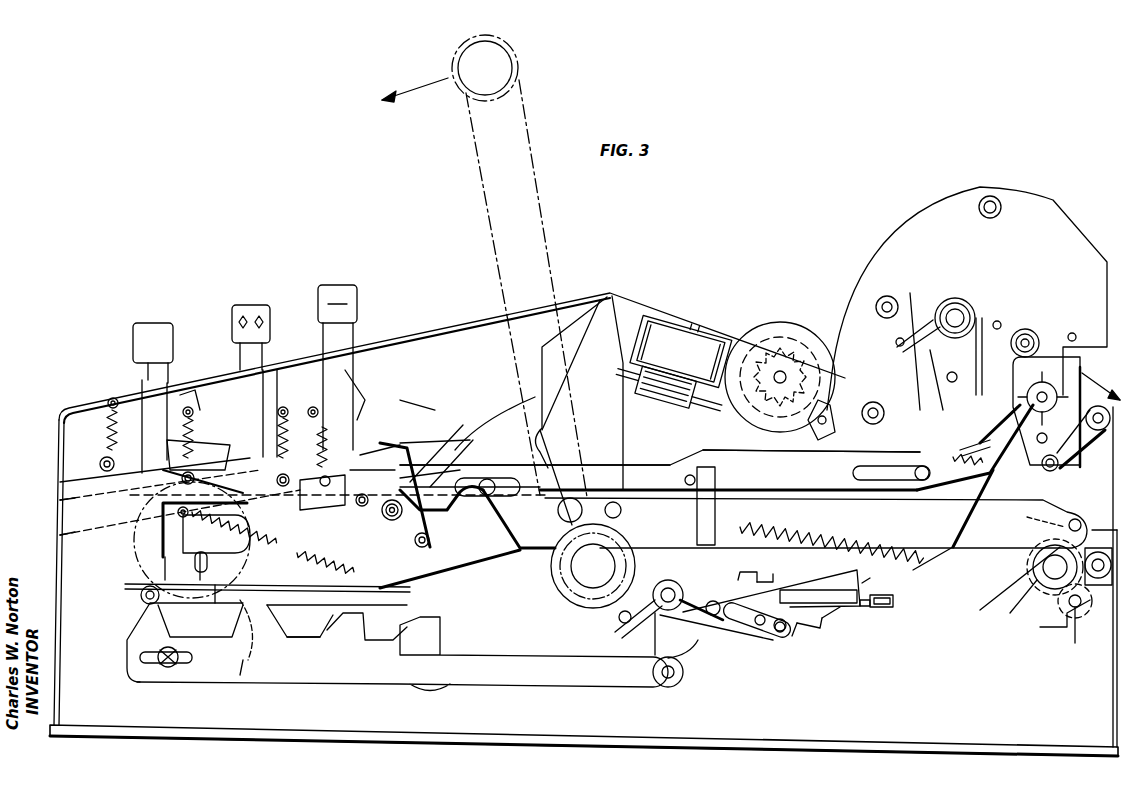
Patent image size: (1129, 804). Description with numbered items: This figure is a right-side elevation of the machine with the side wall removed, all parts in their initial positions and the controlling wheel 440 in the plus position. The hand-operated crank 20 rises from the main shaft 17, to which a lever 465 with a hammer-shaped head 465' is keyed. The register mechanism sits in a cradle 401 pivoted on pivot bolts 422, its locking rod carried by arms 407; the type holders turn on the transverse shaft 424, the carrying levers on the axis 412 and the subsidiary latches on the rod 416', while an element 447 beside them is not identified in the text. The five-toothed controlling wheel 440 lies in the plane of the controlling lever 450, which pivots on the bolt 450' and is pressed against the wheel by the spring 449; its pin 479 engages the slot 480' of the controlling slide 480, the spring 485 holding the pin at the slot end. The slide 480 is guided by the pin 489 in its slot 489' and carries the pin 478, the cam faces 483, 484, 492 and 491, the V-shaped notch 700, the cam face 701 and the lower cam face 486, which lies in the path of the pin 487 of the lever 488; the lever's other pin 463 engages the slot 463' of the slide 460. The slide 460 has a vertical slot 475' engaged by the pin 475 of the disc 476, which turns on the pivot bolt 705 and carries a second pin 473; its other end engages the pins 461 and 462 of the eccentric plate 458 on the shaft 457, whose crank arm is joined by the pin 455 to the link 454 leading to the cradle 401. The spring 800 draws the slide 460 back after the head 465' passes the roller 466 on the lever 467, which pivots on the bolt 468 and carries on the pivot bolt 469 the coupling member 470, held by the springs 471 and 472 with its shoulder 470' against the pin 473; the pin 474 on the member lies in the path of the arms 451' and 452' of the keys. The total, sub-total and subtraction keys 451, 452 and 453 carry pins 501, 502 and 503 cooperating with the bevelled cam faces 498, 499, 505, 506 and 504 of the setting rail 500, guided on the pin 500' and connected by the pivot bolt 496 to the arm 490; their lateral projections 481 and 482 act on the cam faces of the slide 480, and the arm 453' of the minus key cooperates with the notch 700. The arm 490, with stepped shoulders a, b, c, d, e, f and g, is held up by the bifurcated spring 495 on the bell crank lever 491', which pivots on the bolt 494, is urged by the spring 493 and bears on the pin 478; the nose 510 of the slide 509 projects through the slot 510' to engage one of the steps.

The hand-operated crank 20 is at (526, 132).
The main shaft 17 is at (576, 574).
The cradle 401 is at (1101, 381).
The arms 407 is at (987, 447).
The axis 412 is at (990, 196).
The rod 416' is at (1093, 323).
The pivot bolts 422 is at (1000, 445).
The shaft 424 is at (870, 402).
The controlling wheel 440 is at (1052, 366).
The hole 447 is at (997, 320).
The spring 449 is at (915, 330).
The controlling lever 450 is at (909, 345).
The bolt 450' is at (953, 305).
The total key 451 is at (141, 398).
The arm 451' is at (217, 513).
The sub-total key 452 is at (269, 381).
The arm 452' is at (198, 453).
The subtraction key 453 is at (355, 367).
The arm 453' is at (397, 409).
The link 454 is at (1090, 477).
The pin 455 is at (1078, 548).
The shaft 457 is at (1045, 568).
The eccentric plate 458 is at (1078, 608).
The slide 460 is at (975, 548).
The pin 461 is at (1075, 643).
The pin 462 is at (1068, 524).
The pin 463 is at (600, 381).
The slot 463' is at (612, 510).
The lever 465 is at (557, 393).
The head 465' is at (494, 423).
The roller 466 is at (440, 516).
The lever 467 is at (421, 548).
The pivot bolt 468 is at (412, 488).
The pivot bolt 469 is at (390, 522).
The coupling member 470 is at (155, 537).
The shoulder 470' is at (43, 502).
The spring 471 is at (110, 398).
The spring 472 is at (315, 564).
The pin 473 is at (140, 486).
The pin 474 is at (148, 518).
The pin 475 is at (221, 602).
The slot 475' is at (257, 666).
The disc 476 is at (172, 556).
The pin 478 is at (688, 476).
The pin 479 is at (918, 468).
The controlling slide 480 is at (811, 445).
The slot 480' is at (874, 456).
The lateral projection 481 is at (180, 407).
The lateral projection 482 is at (283, 405).
The cam face 483 is at (104, 445).
The cam face 484 is at (202, 403).
The spring 485 is at (952, 446).
The cam face 486 is at (305, 508).
The pin 487 is at (330, 488).
The lever 488 is at (405, 444).
The pin 489 is at (487, 509).
The slot 489' is at (456, 456).
The arm 490 is at (815, 584).
The cam face 491 is at (205, 434).
The bell crank lever 491' is at (727, 506).
The cam face 492 is at (287, 432).
The spring 493 is at (617, 622).
The pivot bolt 494 is at (665, 582).
The bifurcated spring 495 is at (745, 636).
The pivot bolt 496 is at (676, 678).
The cam face 498 is at (127, 630).
The cam face 499 is at (200, 619).
The setting rail 500 is at (417, 652).
The pin 500' is at (169, 675).
The pin 501 is at (140, 596).
The pin 502 is at (255, 630).
The pin 503 is at (356, 594).
The cam face 504 is at (335, 632).
The cam face 505 is at (250, 620).
The cam face 506 is at (297, 621).
The slide 509 is at (876, 606).
The nose 510 is at (901, 608).
The slot 510' is at (898, 592).
The V-shaped notch 700 is at (366, 395).
The cam face 701 is at (415, 401).
The pivot bolt 705 is at (150, 540).
The spring 800 is at (812, 530).
The stepped shoulder a is at (869, 573).
The stepped shoulder b is at (836, 620).
The stepped shoulder c is at (815, 633).
The stepped shoulder d is at (803, 636).
The stepped shoulder e is at (782, 632).
The stepped shoulder f is at (747, 568).
The stepped shoulder g is at (766, 573).